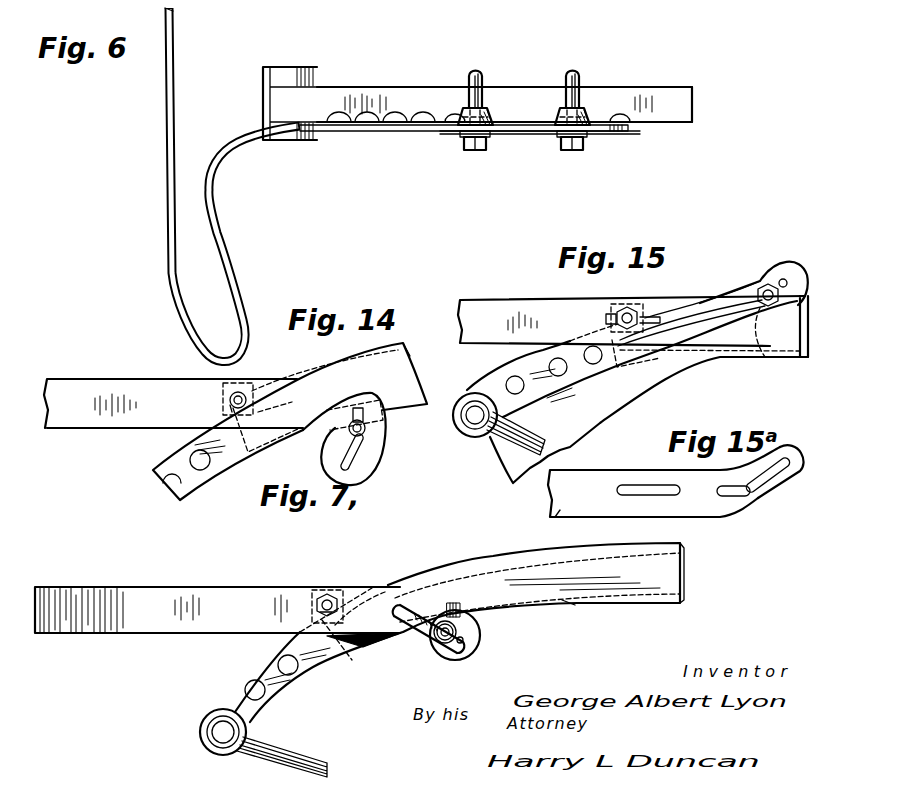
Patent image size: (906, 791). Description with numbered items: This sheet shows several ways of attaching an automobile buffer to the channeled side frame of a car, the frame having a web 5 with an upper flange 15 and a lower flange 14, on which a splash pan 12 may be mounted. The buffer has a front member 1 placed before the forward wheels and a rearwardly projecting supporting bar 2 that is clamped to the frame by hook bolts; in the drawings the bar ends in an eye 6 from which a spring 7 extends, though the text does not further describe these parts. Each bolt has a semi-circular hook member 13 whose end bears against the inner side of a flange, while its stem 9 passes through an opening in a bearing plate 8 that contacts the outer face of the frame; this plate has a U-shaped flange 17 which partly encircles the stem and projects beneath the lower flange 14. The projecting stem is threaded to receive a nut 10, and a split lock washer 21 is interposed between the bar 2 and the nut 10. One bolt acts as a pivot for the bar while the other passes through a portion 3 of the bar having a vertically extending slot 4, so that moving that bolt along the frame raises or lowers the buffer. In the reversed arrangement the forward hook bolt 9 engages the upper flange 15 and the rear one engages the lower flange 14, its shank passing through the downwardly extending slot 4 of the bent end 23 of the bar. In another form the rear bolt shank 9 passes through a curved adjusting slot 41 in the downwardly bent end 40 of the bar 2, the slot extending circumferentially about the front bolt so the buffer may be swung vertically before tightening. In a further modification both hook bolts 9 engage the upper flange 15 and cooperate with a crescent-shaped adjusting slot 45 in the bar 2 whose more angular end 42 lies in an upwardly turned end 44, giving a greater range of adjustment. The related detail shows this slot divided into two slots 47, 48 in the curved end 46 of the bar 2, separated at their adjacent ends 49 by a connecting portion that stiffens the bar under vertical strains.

In FIG. 6, the front member 1 is at (164, 152).
In FIG. 7, the front member 1 is at (80, 592).
In FIG. 6, the supporting bar 2 is at (418, 118).
In FIG. 14, the supporting bar 2 is at (92, 420).
In FIG. 15, the supporting bar 2 is at (519, 313).
In FIG. 15A, the supporting bar 2 is at (582, 485).
In FIG. 7, the supporting bar 2 is at (253, 598).
In FIG. 6, the portion of the bar 3 is at (628, 129).
In FIG. 7, the slot 4 is at (412, 622).
In FIG. 14, the web 5 is at (405, 393).
In FIG. 15, the web 5 is at (620, 392).
In FIG. 7, the web 5 is at (622, 585).
In FIG. 6, the eye 6 is at (263, 80).
In FIG. 15, the eye 6 is at (477, 420).
In FIG. 7, the eye 6 is at (219, 720).
In FIG. 15, the spring 7 is at (526, 443).
In FIG. 7, the spring 7 is at (268, 745).
In FIG. 6, the bearing plate 8 is at (545, 133).
In FIG. 14, the bearing plate 8 is at (372, 398).
In FIG. 15, the bearing plate 8 is at (608, 368).
In FIG. 7, the bearing plate 8 is at (350, 648).
In FIG. 6, the stem 9 is at (470, 152).
In FIG. 14, the stem 9 is at (242, 392).
In FIG. 15, the stem 9 is at (626, 307).
In FIG. 7, the stem 9 is at (340, 600).
In FIG. 6, the nut 10 is at (484, 151).
In FIG. 14, the nut 10 is at (230, 405).
In FIG. 15, the nut 10 is at (655, 316).
In FIG. 7, the nut 10 is at (462, 643).
In FIG. 15, the splash pan 12 is at (603, 420).
In FIG. 6, the semi-circular hook member 13 is at (482, 78).
In FIG. 7, the lower flange 14 is at (575, 608).
In FIG. 6, the upper flange 15 is at (652, 98).
In FIG. 14, the upper flange 15 is at (405, 352).
In FIG. 15A, the upper flange 15 is at (592, 517).
In FIG. 7, the upper flange 15 is at (580, 553).
In FIG. 6, the flange 17 is at (493, 113).
In FIG. 6, the split lock washer 21 is at (462, 137).
In FIG. 7, the bent end 23 is at (480, 644).
In FIG. 14, the downwardly bent end 40 is at (372, 472).
In FIG. 7, the downwardly bent end 40 is at (328, 593).
In FIG. 14, the adjusting slot 41 is at (341, 463).
In FIG. 15, the angular end of the slot 42 is at (784, 279).
In FIG. 15, the upwardly turned end 44 is at (758, 291).
In FIG. 15, the adjusting slot 45 is at (608, 315).
In FIG. 15A, the curved end 46 is at (788, 448).
In FIG. 15A, the slot 47 is at (640, 497).
In FIG. 15A, the slot 48 is at (750, 495).
In FIG. 15A, the adjacent ends 49 is at (712, 496).